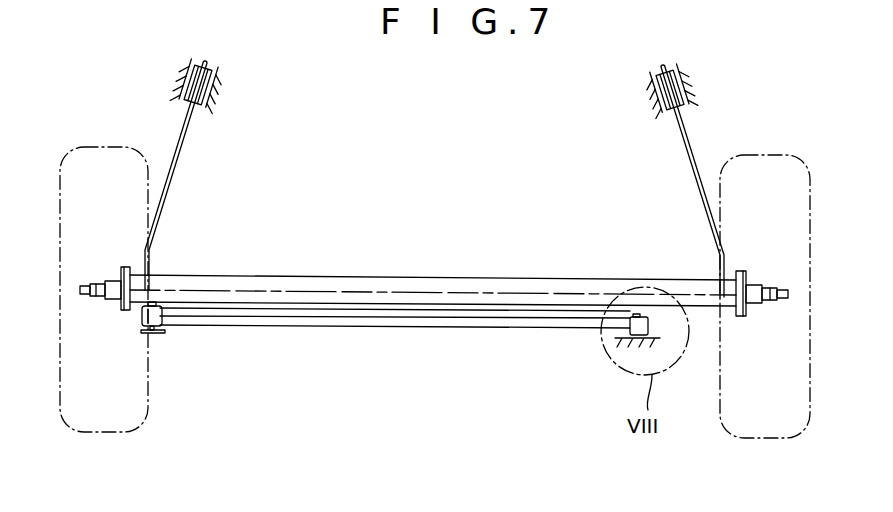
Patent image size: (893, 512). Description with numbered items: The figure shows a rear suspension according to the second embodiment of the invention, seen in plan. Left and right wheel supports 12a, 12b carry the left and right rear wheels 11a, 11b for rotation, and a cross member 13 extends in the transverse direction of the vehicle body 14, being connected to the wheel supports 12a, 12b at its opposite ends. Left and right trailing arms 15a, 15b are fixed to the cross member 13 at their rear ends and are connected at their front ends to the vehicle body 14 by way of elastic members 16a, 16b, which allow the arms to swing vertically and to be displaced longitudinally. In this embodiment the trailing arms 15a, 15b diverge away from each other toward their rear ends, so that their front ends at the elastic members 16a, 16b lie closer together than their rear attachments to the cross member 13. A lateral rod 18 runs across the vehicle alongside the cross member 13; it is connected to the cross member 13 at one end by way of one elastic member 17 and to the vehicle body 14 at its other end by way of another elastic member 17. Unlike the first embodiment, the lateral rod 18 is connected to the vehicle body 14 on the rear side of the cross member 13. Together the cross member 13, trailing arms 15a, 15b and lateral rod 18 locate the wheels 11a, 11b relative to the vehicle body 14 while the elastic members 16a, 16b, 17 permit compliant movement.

The left rear wheel 11a is at (118, 147).
The right rear wheel 11b is at (790, 155).
The left wheel support 12a is at (104, 283).
The right wheel support 12b is at (768, 290).
The cross member 13 is at (326, 280).
The vehicle body 14 is at (216, 73).
The left trailing arm 15a is at (174, 165).
The right trailing arm 15b is at (690, 178).
The elastic member 16a is at (199, 105).
The elastic member 16b is at (677, 115).
The elastic member 17 is at (160, 328).
The lateral rod 18 is at (340, 323).